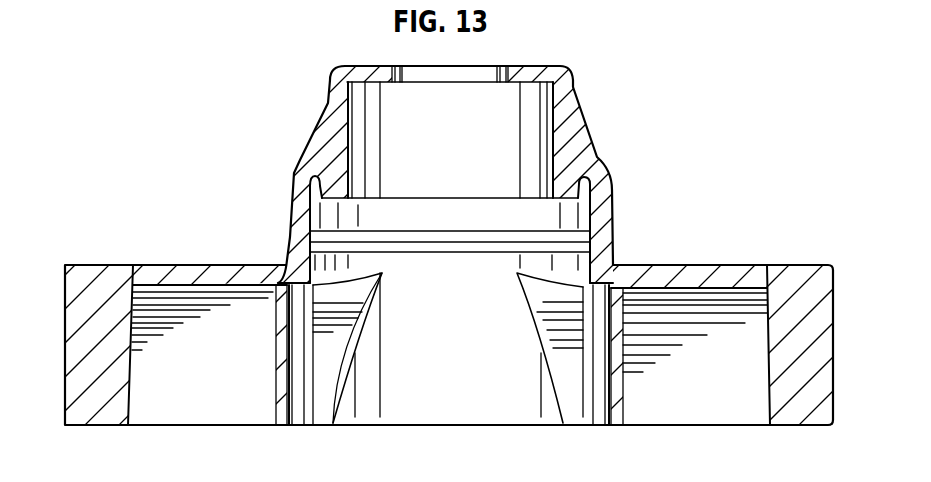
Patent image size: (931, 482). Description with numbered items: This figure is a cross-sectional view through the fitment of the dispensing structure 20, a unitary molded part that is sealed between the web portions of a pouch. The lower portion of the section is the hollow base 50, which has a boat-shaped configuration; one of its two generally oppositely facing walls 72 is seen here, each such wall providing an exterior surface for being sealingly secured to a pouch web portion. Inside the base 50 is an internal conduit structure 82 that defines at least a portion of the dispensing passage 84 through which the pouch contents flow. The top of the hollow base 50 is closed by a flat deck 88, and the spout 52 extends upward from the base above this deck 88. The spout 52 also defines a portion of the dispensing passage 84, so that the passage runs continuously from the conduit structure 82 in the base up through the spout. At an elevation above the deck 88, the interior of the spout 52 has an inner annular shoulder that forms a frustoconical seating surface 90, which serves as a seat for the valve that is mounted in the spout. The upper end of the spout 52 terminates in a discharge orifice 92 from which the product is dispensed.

The dispensing structure 20 is at (637, 151).
The hollow base 50 is at (55, 425).
The spout 52 is at (250, 58).
The wall 72 is at (707, 410).
The internal conduit structure 82 is at (620, 411).
The dispensing passage 84 is at (494, 161).
The flat deck 88 is at (665, 277).
The frustoconical seating surface 90 is at (597, 208).
The discharge orifice 92 is at (403, 70).